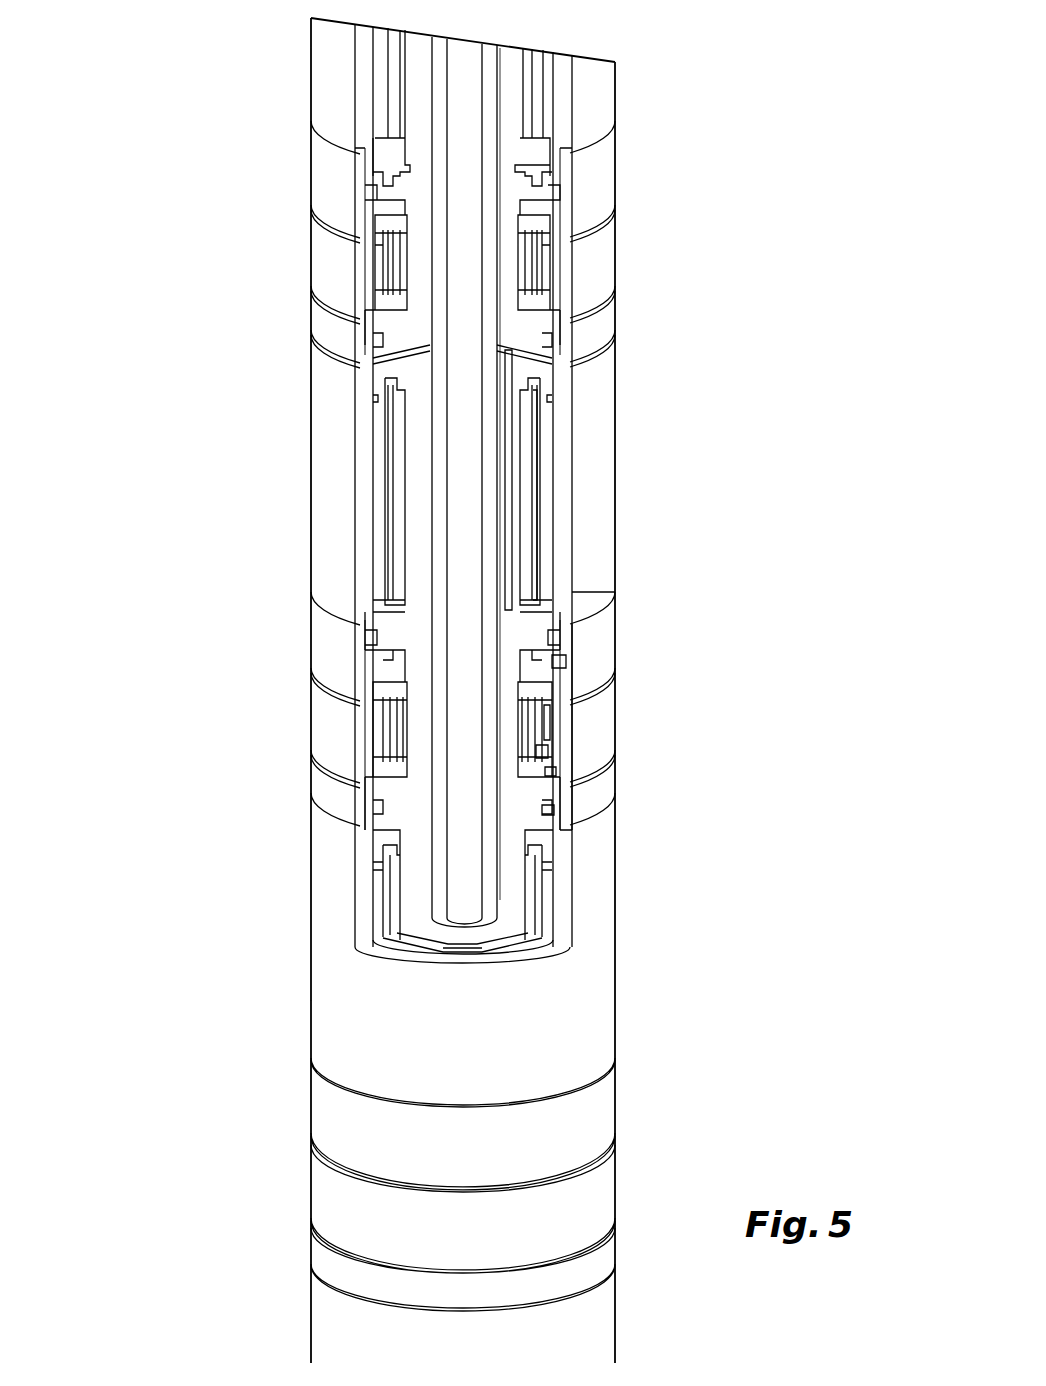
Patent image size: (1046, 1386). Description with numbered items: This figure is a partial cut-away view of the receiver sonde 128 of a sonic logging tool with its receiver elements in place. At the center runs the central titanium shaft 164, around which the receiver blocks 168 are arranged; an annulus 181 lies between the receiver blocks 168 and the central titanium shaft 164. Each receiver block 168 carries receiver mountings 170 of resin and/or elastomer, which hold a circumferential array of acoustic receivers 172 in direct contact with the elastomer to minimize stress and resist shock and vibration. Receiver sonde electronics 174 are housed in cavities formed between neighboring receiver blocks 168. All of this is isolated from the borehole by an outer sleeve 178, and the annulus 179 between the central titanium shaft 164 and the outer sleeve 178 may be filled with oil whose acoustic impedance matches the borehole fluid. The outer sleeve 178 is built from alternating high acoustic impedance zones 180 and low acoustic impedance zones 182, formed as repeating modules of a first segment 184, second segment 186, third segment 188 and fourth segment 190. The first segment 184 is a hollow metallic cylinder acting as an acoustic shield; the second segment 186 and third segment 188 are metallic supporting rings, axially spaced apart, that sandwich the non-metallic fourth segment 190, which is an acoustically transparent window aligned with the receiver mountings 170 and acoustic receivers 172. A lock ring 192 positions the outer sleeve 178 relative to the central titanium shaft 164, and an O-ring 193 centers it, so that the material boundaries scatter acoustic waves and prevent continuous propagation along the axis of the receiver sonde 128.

The receiver sonde 128 is at (173, 309).
The central titanium shaft 164 is at (487, 110).
The receiver block 168 is at (510, 564).
The receiver mounting 170 is at (552, 771).
The acoustic receiver 172 is at (542, 752).
The receiver sonde electronics 174 is at (533, 463).
The outer sleeve 178 is at (628, 355).
The annulus 179 is at (548, 723).
The high acoustic impedance zone 180 is at (300, 655).
The annulus 181 is at (500, 410).
The low acoustic impedance zone 182 is at (300, 195).
The first segment 184 is at (607, 512).
The second segment 186 is at (605, 618).
The third segment 188 is at (600, 795).
The fourth segment 190 is at (590, 715).
The lock ring 192 is at (560, 663).
The O-ring 193 is at (550, 810).